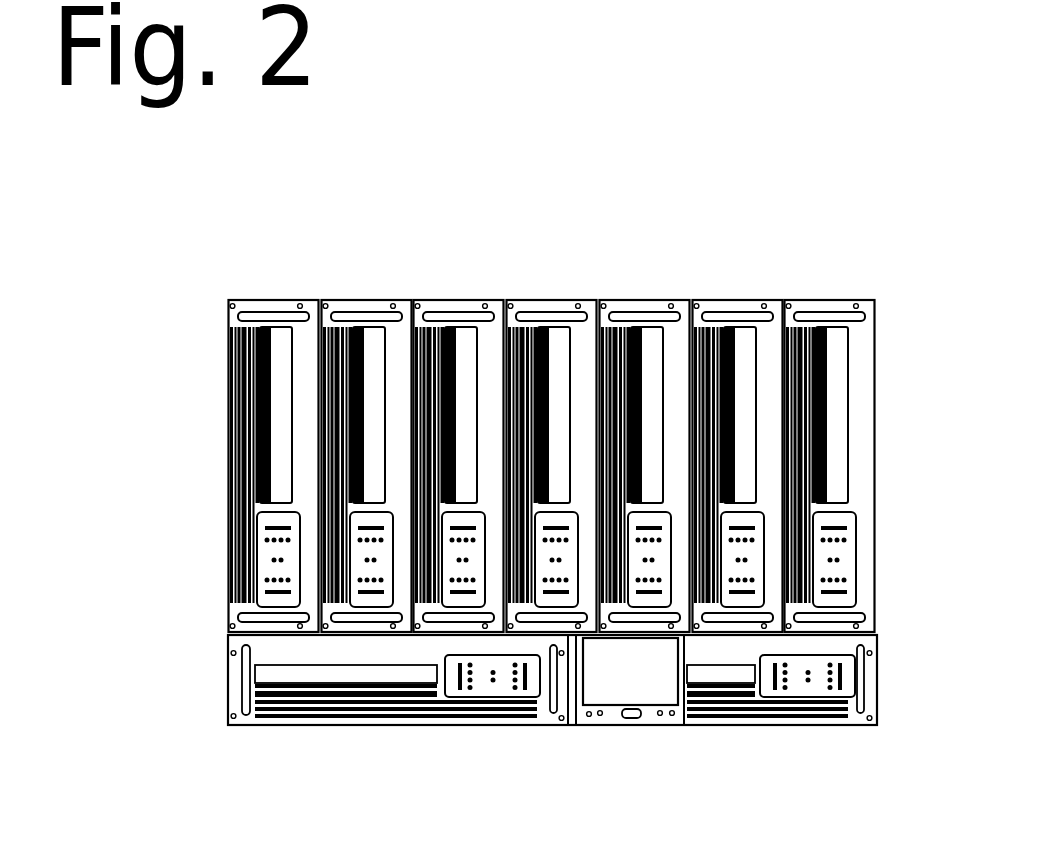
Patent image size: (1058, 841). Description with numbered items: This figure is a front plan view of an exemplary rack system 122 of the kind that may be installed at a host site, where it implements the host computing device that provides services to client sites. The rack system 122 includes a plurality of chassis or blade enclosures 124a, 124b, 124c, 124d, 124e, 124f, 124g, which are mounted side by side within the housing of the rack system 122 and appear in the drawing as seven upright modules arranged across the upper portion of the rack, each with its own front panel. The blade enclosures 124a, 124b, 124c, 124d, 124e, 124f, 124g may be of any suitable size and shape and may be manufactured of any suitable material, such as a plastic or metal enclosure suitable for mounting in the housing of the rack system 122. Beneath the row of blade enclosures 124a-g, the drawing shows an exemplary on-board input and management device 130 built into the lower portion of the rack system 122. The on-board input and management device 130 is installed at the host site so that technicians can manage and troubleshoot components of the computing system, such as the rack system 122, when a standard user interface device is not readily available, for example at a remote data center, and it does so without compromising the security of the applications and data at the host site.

The rack system 122 is at (786, 210).
The blade enclosure 124a is at (250, 300).
The blade enclosure 124b is at (357, 300).
The blade enclosure 124c is at (462, 300).
The blade enclosure 124d is at (567, 300).
The blade enclosure 124e is at (662, 300).
The blade enclosure 124f is at (758, 300).
The blade enclosure 124g is at (873, 300).
The on-board input and management device 130 is at (623, 721).